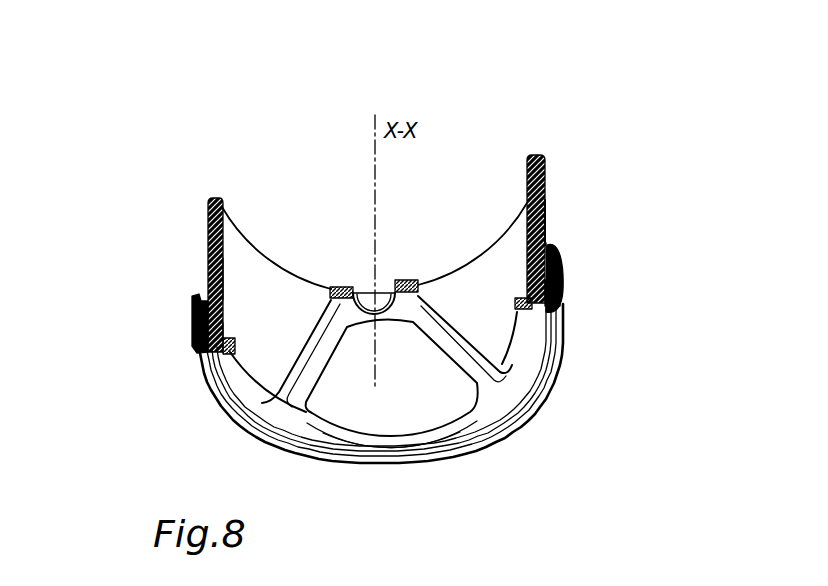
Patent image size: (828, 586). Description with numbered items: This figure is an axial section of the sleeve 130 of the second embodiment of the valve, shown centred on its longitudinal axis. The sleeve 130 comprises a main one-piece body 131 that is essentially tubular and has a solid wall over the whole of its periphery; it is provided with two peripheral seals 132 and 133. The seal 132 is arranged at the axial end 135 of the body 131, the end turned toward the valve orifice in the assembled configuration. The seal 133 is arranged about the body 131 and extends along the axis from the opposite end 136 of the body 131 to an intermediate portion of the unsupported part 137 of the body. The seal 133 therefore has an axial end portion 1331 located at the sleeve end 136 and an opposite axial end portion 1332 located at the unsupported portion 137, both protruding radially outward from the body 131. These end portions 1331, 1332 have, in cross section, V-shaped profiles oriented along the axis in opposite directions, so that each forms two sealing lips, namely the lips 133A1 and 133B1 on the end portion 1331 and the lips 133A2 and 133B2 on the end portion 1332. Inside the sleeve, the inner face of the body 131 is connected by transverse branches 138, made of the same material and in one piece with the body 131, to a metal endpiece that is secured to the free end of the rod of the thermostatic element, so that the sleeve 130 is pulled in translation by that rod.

The sleeve 130 is at (200, 246).
The main one-piece body 131 is at (323, 21).
The peripheral seal 132 is at (538, 148).
The peripheral seal 133 is at (193, 325).
The axial end portion 1331 is at (558, 290).
The opposite axial end portion 1332 is at (560, 258).
The sealing lip 133A1 is at (556, 332).
The sealing lip 133A2 is at (545, 199).
The sealing lip 133B1 is at (554, 366).
The sealing lip 133B2 is at (557, 243).
The axial end 135 is at (222, 207).
The end 136 is at (223, 323).
The unsupported part 137 is at (223, 258).
The transverse branches 138 is at (447, 347).